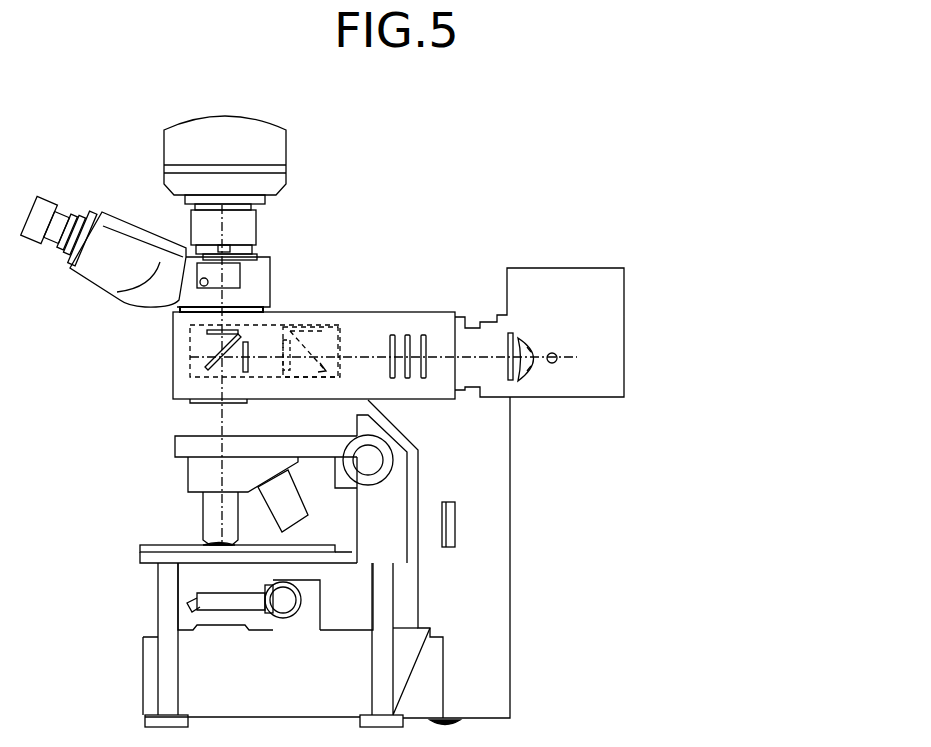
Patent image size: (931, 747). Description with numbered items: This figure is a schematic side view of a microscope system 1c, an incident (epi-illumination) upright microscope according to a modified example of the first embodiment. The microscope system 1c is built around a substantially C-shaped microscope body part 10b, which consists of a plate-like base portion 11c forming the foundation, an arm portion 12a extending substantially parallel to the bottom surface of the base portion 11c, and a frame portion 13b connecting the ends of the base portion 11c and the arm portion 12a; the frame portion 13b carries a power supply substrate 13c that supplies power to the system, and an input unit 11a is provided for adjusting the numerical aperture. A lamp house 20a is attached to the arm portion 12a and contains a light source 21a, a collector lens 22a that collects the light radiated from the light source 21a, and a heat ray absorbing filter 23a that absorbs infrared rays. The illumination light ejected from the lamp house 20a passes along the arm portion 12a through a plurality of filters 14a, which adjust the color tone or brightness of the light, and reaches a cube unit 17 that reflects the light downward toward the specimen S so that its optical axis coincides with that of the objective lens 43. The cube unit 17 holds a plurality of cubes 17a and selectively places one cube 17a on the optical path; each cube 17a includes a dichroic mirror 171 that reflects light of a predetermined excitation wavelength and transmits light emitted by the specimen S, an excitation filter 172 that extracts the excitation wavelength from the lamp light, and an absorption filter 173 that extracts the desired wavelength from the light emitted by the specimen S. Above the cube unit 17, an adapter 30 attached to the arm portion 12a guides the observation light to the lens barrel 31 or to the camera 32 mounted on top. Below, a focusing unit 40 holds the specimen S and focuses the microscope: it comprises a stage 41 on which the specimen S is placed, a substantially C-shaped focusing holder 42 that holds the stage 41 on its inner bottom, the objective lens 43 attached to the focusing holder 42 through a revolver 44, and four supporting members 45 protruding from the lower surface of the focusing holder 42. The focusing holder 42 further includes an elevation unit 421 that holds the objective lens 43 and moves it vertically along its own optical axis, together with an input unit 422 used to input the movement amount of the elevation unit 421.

The microscope system 1c is at (407, 168).
The microscope body part 10b is at (540, 615).
The input unit 11a is at (293, 605).
The base portion 11c is at (203, 655).
The arm portion 12a is at (392, 335).
The frame portion 13b is at (493, 557).
The power supply substrate 13c is at (456, 522).
The filters 14a is at (424, 335).
The cube unit 17 is at (275, 308).
The cube 17a is at (313, 327).
The dichroic mirror 171 is at (205, 366).
The excitation filter 172 is at (248, 367).
The absorption filter 173 is at (207, 332).
The lamp house 20a is at (612, 282).
The light source 21a is at (555, 345).
The collector lens 22a is at (540, 370).
The heat ray absorbing filter 23a is at (512, 378).
The adapter 30 is at (260, 262).
The lens barrel 31 is at (113, 213).
The camera 32 is at (275, 144).
The focusing unit 40 is at (112, 489).
The stage 41 is at (145, 548).
The focusing holder 42 is at (395, 490).
The elevation unit 421 is at (180, 446).
The input unit 422 is at (393, 460).
The objective lens 43 is at (212, 507).
The revolver 44 is at (198, 472).
The supporting members 45 is at (165, 687).
The specimen S is at (202, 543).